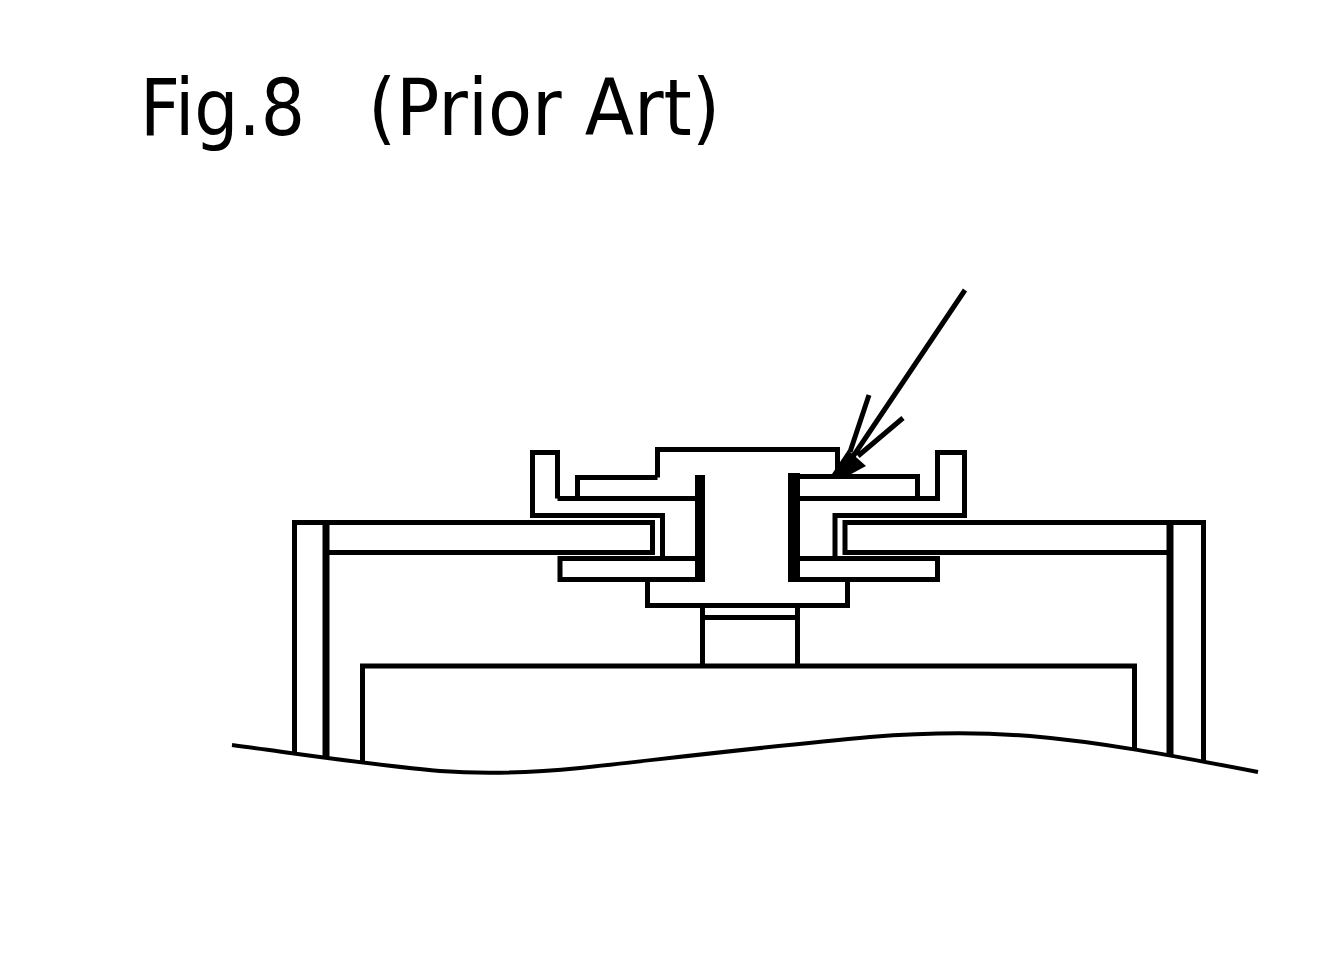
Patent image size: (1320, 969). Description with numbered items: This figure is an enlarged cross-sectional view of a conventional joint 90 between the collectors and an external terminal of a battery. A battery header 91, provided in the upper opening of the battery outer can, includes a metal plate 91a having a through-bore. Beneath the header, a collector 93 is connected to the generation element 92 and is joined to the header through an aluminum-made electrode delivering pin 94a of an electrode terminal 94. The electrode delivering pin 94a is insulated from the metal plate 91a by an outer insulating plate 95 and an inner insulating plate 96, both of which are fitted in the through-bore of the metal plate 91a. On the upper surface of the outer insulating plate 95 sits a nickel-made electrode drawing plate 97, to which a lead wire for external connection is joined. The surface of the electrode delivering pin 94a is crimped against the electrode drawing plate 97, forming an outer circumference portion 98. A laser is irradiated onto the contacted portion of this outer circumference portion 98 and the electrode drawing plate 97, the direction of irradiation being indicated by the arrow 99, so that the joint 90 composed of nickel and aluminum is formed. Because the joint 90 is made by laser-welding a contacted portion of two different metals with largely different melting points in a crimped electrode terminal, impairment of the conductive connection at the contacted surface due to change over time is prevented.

The joint 90 is at (232, 307).
The battery header 91 is at (386, 470).
The metal plate 91a is at (1075, 537).
The generation element 92 is at (490, 715).
The collector 93 is at (760, 640).
The electrode terminal 94 is at (715, 400).
The electrode delivering pin 94a is at (765, 458).
The outer insulating plate 95 is at (963, 467).
The inner insulating plate 96 is at (925, 582).
The electrode drawing plate 97 is at (615, 479).
The outer circumference portion 98 is at (843, 455).
The incident beam arrow 99 is at (916, 359).